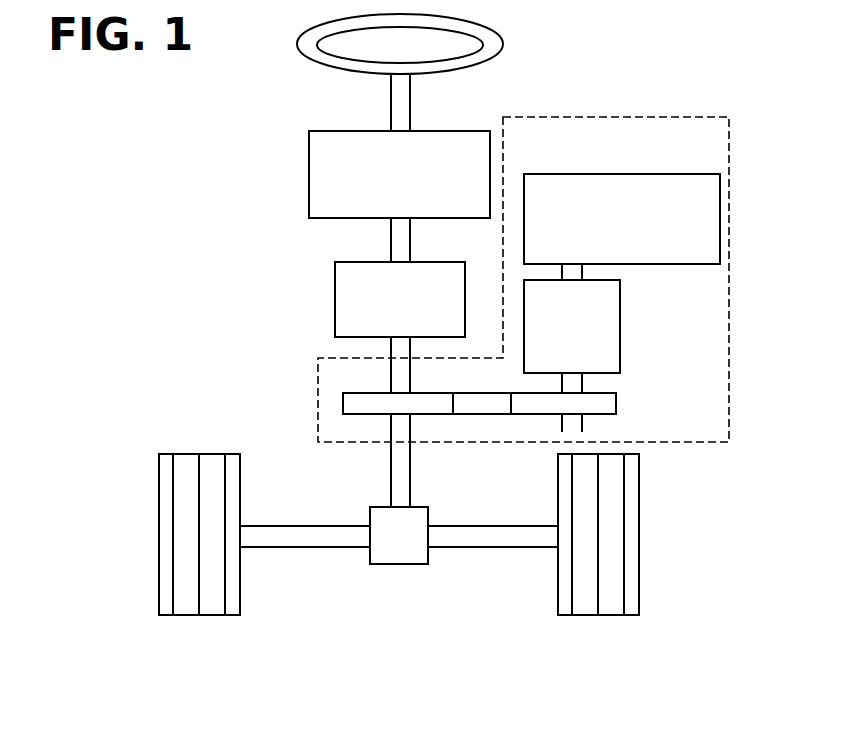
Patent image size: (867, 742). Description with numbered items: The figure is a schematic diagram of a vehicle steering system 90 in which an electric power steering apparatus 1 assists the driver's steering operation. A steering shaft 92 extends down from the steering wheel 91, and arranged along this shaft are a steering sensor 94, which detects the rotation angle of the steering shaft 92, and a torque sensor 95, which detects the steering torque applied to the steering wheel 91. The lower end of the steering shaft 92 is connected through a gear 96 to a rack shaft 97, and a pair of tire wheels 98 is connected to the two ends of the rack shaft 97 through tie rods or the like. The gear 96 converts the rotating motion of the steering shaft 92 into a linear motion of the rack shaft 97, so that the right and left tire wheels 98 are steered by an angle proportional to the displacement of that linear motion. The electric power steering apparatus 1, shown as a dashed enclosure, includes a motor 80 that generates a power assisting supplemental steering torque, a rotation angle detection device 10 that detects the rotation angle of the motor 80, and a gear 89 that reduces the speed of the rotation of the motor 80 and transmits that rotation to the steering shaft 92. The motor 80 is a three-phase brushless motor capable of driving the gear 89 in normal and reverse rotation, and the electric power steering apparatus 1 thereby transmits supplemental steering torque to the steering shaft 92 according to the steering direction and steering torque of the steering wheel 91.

The electric power steering apparatus 1 is at (731, 137).
The rotation angle detection device 10 is at (720, 198).
The motor 80 is at (620, 295).
The gear 89 is at (616, 400).
The steering system 90 is at (341, 654).
The steering wheel 91 is at (297, 44).
The steering shaft 92 is at (391, 100).
The steering sensor 94 is at (309, 154).
The torque sensor 95 is at (335, 275).
The gear 96 is at (388, 564).
The rack shaft 97 is at (296, 547).
The tire wheels 98 is at (213, 615).